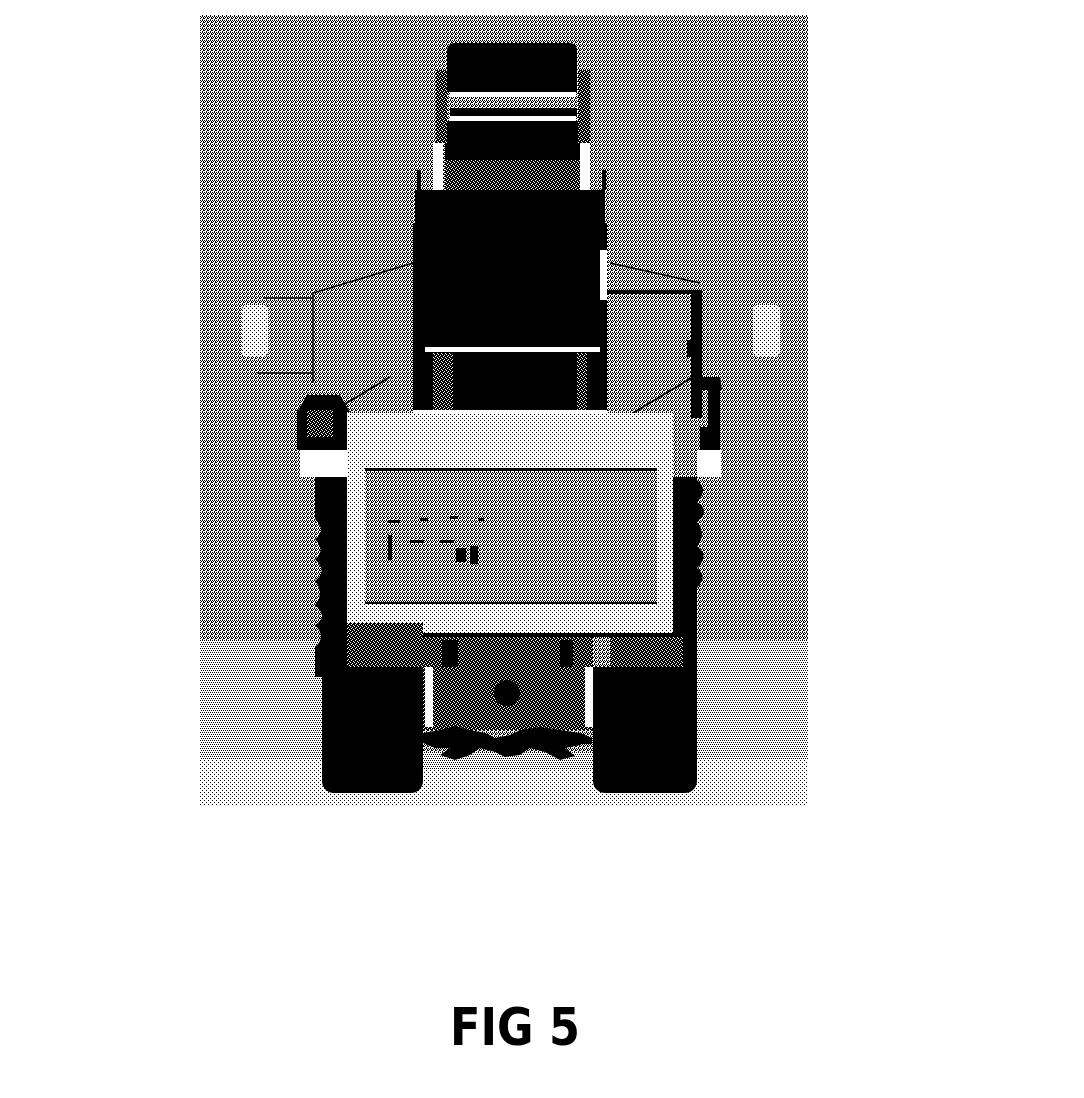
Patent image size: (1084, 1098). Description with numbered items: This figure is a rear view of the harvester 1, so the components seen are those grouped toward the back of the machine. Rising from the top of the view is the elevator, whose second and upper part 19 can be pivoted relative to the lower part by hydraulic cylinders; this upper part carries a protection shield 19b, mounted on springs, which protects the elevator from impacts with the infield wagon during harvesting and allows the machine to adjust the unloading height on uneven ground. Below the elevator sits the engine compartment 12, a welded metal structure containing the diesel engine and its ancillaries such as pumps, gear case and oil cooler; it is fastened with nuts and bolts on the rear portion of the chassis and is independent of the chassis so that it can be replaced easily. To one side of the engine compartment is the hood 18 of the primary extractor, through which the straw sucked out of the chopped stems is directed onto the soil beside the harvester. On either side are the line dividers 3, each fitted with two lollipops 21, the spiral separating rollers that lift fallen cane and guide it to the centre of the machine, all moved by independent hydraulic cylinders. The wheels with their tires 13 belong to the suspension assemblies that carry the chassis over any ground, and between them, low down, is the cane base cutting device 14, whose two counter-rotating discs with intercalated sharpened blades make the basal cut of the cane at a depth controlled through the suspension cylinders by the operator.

The harvester 1 is at (408, 197).
The line dividers 3 is at (300, 413).
The engine compartment 12 is at (672, 563).
The front tires 13 is at (323, 678).
The base cutting disc 14 is at (488, 747).
The hood 18 is at (690, 343).
The second and upper part of the elevator 19 is at (440, 68).
The protection shield 19b is at (410, 268).
The lollipops 21 is at (323, 527).